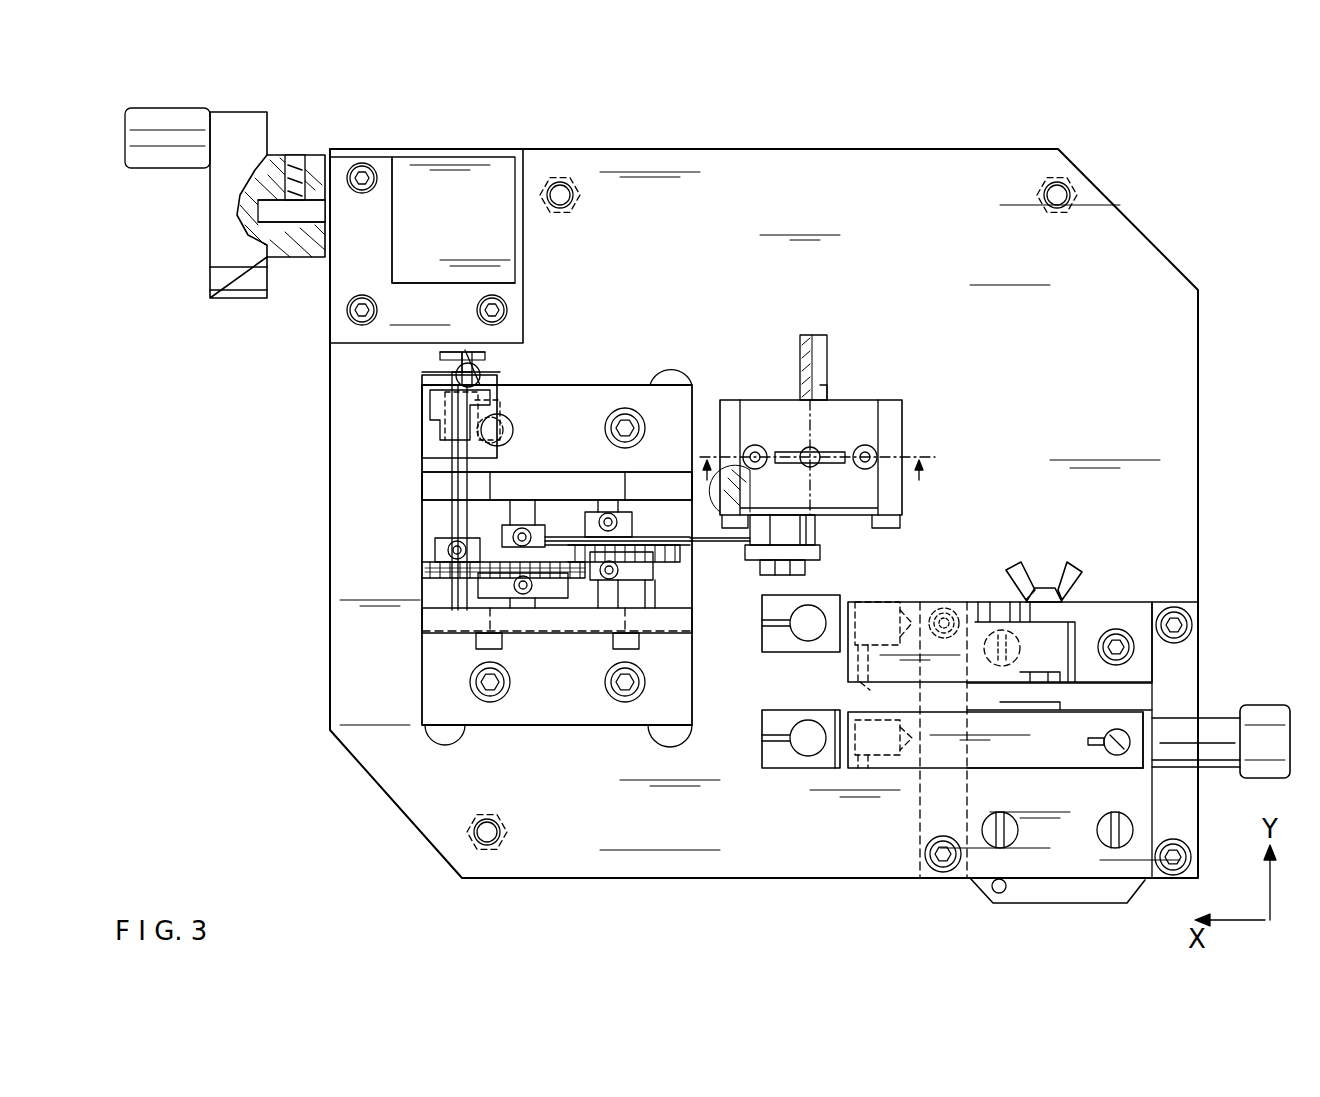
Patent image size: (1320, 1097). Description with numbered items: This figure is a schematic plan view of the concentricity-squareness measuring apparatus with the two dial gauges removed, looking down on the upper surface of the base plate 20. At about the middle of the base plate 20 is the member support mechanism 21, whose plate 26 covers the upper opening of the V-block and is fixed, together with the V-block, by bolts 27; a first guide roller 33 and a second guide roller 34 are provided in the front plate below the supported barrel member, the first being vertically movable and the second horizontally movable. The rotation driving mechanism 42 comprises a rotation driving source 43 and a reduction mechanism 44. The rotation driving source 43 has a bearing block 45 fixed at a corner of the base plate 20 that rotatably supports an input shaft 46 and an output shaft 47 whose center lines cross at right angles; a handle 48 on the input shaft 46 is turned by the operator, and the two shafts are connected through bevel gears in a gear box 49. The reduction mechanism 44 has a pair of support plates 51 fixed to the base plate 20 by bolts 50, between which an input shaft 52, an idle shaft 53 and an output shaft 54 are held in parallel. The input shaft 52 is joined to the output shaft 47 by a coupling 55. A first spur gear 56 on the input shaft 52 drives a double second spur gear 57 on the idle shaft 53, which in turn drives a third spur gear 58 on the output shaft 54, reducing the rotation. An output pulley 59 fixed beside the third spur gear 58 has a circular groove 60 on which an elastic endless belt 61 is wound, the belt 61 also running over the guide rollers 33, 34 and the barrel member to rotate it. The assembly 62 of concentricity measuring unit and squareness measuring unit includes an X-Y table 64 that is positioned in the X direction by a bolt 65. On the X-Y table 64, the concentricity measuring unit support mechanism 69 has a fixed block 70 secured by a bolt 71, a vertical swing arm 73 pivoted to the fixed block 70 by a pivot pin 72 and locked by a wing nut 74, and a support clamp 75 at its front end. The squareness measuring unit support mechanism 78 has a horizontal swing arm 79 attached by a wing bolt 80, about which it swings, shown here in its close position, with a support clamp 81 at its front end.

The base plate 20 is at (1098, 245).
The member support mechanism 21 is at (856, 527).
The plate 26 is at (845, 400).
The bolts 27 is at (756, 445).
The first guide roller 33 is at (820, 530).
The second guide roller 34 is at (822, 555).
The rotation driving mechanism 42 is at (612, 293).
The rotation driving source 43 is at (288, 145).
The reduction mechanism 44 is at (565, 520).
The bearing block 45 is at (345, 273).
The input shaft 46 is at (270, 215).
The output shaft 47 is at (430, 367).
The handle 48 is at (185, 115).
The gear box 49 is at (500, 165).
The bolts 50 is at (625, 408).
The support plates 51 is at (435, 485).
The input shaft 52 is at (455, 522).
The idle shaft 53 is at (538, 510).
The output shaft 54 is at (620, 505).
The coupling 55 is at (422, 425).
The first spur gear 56 is at (430, 570).
The second spur gear 57 is at (548, 590).
The third spur gear 58 is at (685, 572).
The output pulley 59 is at (577, 540).
The circular groove 60 is at (645, 600).
The elastic endless belt 61 is at (740, 540).
The assembly of concentricity measuring unit and squareness measuring unit 62 is at (1130, 583).
The X-Y table 64 is at (1160, 700).
The bolt 65 is at (1275, 705).
The concentricity measuring unit support mechanism 69 is at (945, 605).
The fixed block 70 is at (1088, 605).
The bolt 71 is at (1135, 650).
The pivot pin 72 is at (1060, 677).
The vertical swing arm 73 is at (908, 690).
The wing nut 74 is at (1035, 585).
The support clamp 75 is at (762, 640).
The squareness measuring unit support mechanism 78 is at (1052, 772).
The horizontal swing arm 79 is at (943, 870).
The wing bolt 80 is at (1128, 772).
The support clamp 81 is at (795, 770).